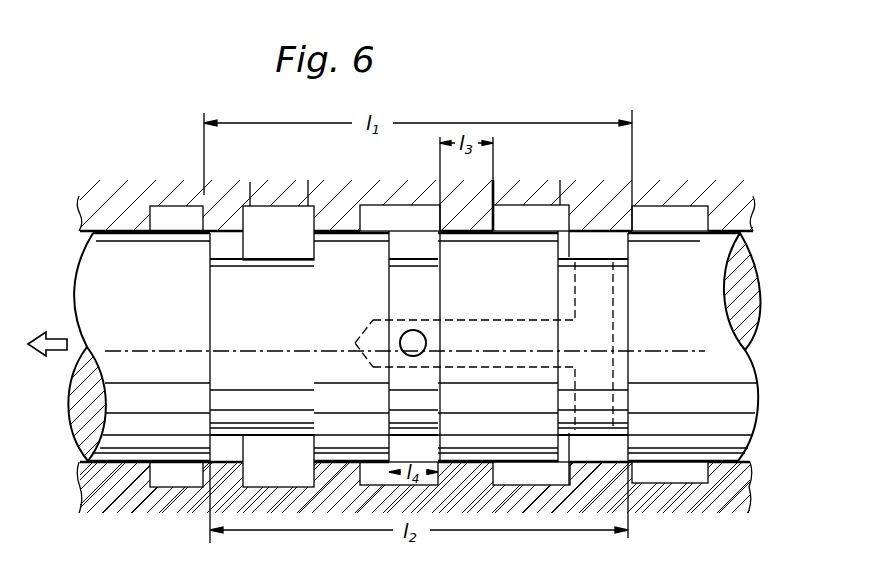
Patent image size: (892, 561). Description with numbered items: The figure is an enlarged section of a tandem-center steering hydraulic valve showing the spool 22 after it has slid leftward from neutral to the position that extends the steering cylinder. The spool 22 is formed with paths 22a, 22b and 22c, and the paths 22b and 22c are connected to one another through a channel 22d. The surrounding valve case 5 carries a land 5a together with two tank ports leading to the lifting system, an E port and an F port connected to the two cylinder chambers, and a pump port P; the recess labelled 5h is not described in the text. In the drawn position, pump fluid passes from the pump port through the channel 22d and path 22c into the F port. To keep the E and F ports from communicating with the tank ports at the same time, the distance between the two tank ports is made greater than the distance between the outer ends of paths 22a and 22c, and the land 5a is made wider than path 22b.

The valve case 5 is at (416, 321).
The housing recess / port P 5h is at (410, 214).
The land 5a is at (472, 238).
The spool 22 is at (425, 346).
The path 22a is at (249, 256).
The path 22b is at (416, 250).
The path 22c is at (599, 256).
The channel 22d is at (416, 357).